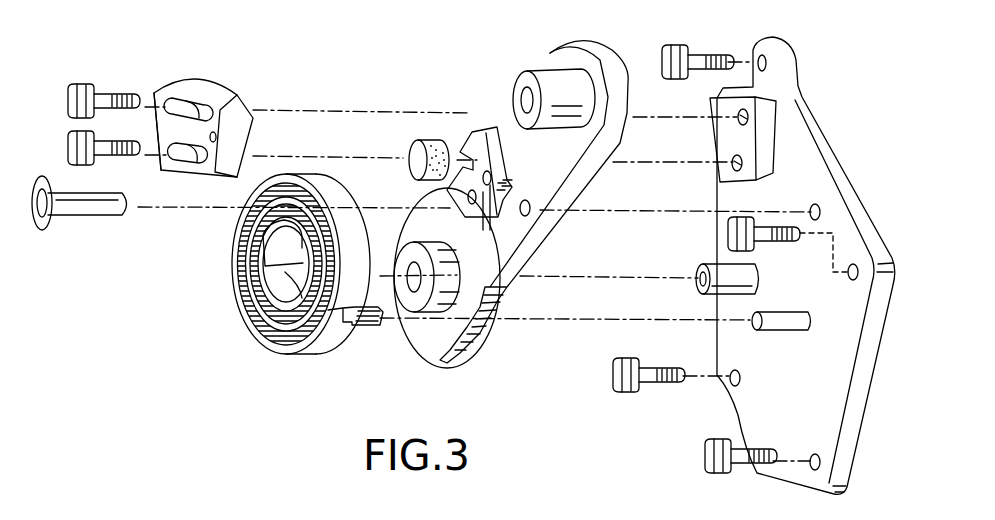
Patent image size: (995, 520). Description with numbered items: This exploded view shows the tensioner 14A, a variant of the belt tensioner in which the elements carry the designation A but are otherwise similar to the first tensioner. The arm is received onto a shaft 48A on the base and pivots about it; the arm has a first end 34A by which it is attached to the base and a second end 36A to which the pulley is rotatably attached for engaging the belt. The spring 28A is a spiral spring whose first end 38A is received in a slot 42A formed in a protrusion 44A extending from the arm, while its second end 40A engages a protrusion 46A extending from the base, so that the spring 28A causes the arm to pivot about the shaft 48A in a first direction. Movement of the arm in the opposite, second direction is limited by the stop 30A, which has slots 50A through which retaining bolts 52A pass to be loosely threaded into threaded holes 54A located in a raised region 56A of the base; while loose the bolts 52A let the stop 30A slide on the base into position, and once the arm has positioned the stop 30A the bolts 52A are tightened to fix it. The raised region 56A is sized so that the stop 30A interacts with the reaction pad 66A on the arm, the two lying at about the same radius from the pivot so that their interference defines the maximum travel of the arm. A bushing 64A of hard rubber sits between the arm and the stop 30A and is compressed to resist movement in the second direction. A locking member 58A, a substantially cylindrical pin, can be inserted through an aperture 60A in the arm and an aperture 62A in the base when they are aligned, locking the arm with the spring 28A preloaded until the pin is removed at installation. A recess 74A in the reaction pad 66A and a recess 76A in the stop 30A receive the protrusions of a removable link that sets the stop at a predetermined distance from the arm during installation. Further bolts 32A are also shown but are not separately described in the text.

The tensioner 14A is at (367, 86).
The spring 28A is at (277, 287).
The stop 30A is at (213, 114).
The bolts 32A is at (675, 55).
The first end of arm 34A is at (534, 188).
The second end of arm 36A is at (563, 58).
The first end of spring 38A is at (265, 266).
The second end of spring 40A is at (362, 326).
The slot 42A is at (402, 260).
The protrusion 44A is at (430, 288).
The protrusion 46A is at (785, 322).
The shaft 48A is at (720, 268).
The slot 50A is at (197, 97).
The retaining bolt 52A is at (104, 97).
The threaded hole 54A is at (742, 162).
The raised region 56A is at (768, 131).
The locking member 58A is at (83, 210).
The aperture 60A is at (529, 203).
The aperture 62A is at (777, 265).
The bushing 64A is at (427, 137).
The reaction pad 66A is at (479, 161).
The recess 74A is at (487, 223).
The recess 76A is at (218, 137).